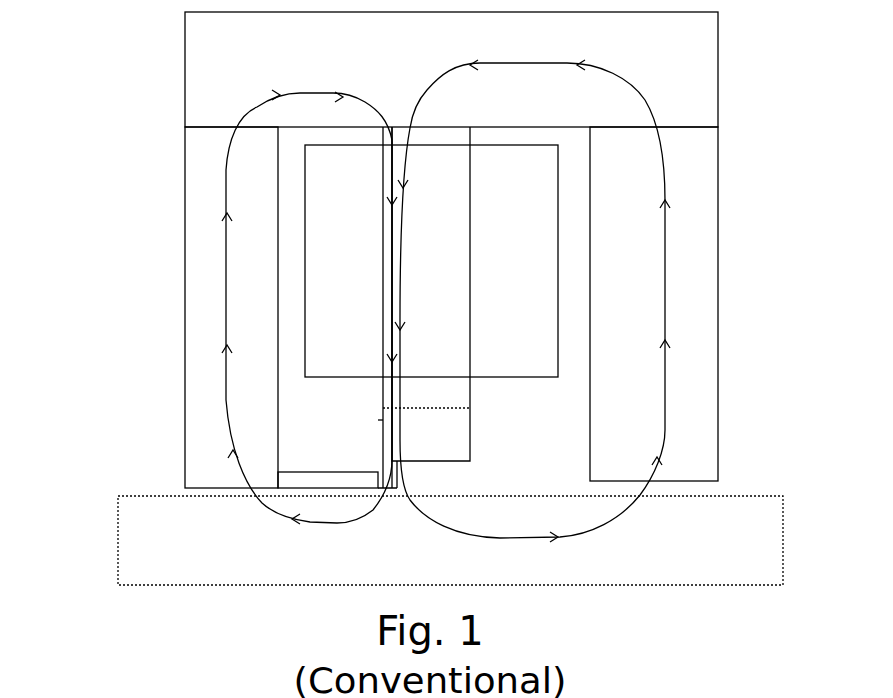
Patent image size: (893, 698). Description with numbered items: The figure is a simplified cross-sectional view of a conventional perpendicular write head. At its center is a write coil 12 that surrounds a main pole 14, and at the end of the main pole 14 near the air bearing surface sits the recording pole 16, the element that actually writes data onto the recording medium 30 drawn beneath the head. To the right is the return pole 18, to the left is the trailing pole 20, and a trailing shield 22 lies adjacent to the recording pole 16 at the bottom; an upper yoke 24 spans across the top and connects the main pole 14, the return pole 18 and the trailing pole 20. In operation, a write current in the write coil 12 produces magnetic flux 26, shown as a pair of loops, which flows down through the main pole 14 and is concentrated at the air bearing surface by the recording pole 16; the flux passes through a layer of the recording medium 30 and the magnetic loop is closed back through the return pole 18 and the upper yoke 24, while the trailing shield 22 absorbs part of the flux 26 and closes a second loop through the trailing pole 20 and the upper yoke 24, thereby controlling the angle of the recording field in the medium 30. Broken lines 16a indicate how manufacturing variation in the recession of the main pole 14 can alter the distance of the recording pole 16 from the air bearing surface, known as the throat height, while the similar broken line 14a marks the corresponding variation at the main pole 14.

The write coil 12 is at (510, 377).
The main pole 14 is at (470, 443).
The primary winding end 14a is at (428, 408).
The recording pole 16 is at (400, 477).
The broken lines indicating recording pole throat height variation 16a is at (383, 420).
The return pole 18 is at (718, 288).
The trailing pole 20 is at (185, 320).
The trailing shield 22 is at (296, 488).
The upper yoke 24 is at (185, 88).
The magnetic flux 26 is at (363, 100).
The recording medium 30 is at (118, 545).